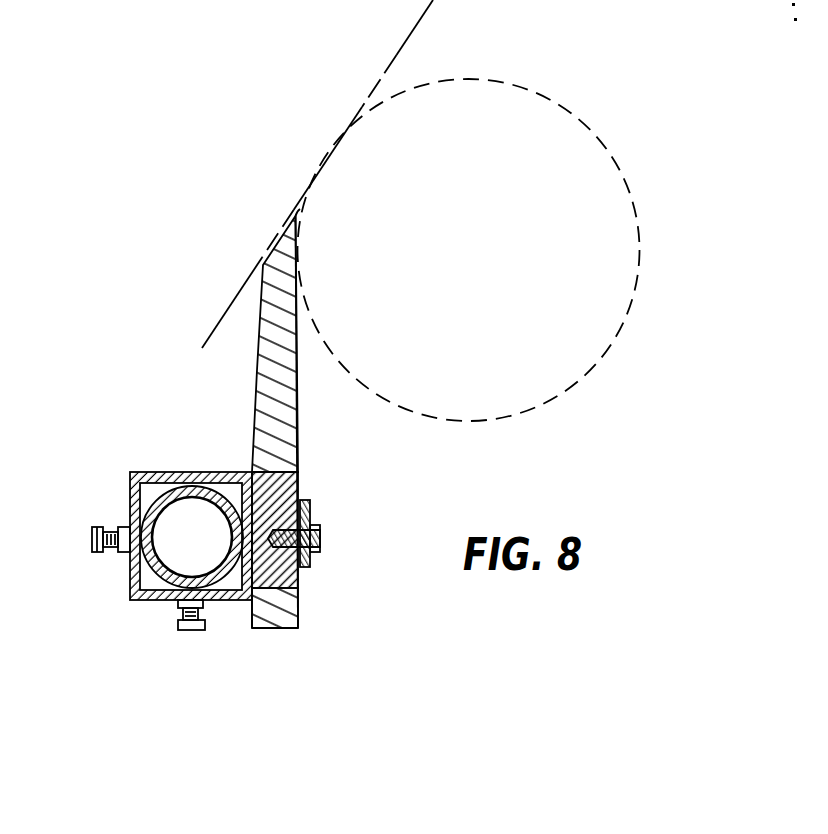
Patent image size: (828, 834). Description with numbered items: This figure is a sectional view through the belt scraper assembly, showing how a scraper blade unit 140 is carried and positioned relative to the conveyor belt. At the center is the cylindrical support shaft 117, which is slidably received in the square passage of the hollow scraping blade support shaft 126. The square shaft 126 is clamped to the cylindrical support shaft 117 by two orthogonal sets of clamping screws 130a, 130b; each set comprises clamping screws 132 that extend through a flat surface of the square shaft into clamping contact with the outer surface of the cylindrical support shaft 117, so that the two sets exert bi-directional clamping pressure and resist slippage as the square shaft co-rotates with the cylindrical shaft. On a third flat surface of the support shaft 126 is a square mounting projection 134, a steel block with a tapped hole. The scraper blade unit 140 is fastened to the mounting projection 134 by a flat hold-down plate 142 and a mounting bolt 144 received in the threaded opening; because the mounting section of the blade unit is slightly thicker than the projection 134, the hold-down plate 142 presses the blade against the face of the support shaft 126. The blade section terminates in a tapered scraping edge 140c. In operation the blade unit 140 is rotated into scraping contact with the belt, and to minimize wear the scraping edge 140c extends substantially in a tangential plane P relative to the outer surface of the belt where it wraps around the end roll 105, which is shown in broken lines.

The tangential plane P is at (417, 22).
The end roll 105 is at (600, 218).
The scraper blade unit 140 is at (345, 355).
The tapered scraping edge 140c is at (302, 212).
The square mounting projection 134 is at (293, 575).
The scraping blade support shaft 126 is at (149, 462).
The cylindrical support shaft 117 is at (158, 512).
The clamping screw 132 is at (110, 527).
The first set of clamping screws 130a is at (88, 563).
The second set of clamping screws 130b is at (192, 642).
The flat hold-down plate 142 is at (307, 558).
The mounting bolt 144 is at (320, 540).